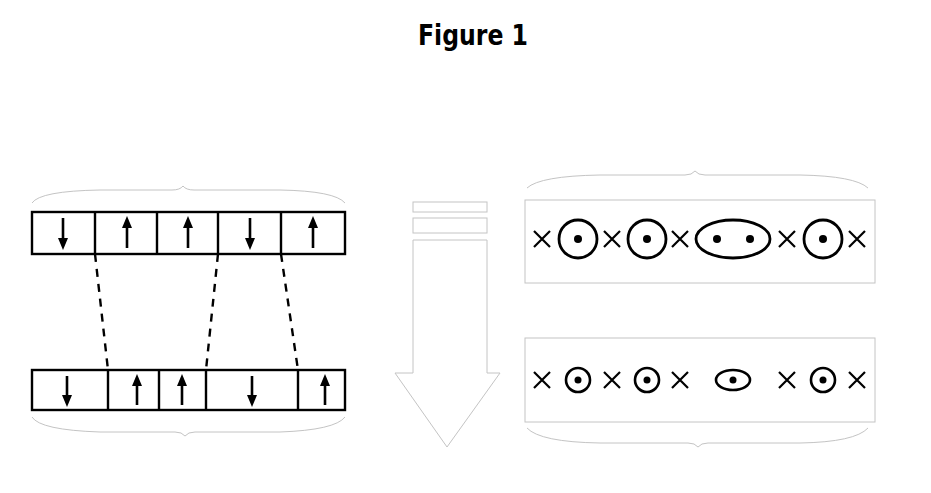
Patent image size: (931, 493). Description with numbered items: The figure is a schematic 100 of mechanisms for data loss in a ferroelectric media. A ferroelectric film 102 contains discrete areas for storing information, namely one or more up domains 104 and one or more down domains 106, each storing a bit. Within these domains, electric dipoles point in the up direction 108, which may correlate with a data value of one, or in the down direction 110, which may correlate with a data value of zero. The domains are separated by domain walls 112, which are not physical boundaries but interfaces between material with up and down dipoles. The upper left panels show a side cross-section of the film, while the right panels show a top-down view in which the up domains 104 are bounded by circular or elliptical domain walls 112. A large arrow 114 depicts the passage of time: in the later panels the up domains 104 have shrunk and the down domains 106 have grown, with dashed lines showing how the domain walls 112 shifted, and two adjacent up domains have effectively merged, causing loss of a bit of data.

The schematic 100 is at (682, 90).
The ferroelectric film 102 is at (471, 307).
The up domain 104 is at (143, 225).
The down domain 106 is at (85, 238).
The electric dipole in the up direction 108 is at (325, 230).
The electric dipole in the down direction 110 is at (250, 233).
The domain wall 112 is at (93, 228).
The large arrow depicting the passage of time 114 is at (468, 358).